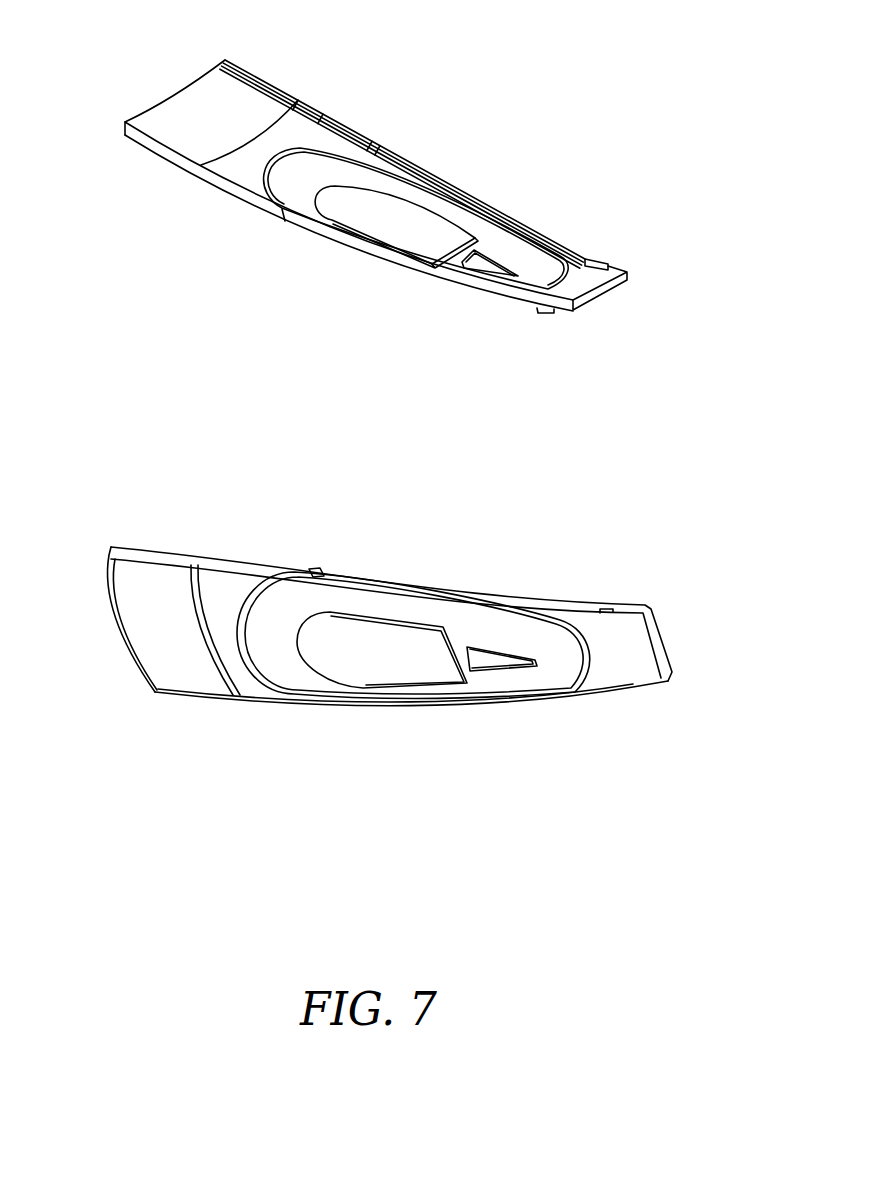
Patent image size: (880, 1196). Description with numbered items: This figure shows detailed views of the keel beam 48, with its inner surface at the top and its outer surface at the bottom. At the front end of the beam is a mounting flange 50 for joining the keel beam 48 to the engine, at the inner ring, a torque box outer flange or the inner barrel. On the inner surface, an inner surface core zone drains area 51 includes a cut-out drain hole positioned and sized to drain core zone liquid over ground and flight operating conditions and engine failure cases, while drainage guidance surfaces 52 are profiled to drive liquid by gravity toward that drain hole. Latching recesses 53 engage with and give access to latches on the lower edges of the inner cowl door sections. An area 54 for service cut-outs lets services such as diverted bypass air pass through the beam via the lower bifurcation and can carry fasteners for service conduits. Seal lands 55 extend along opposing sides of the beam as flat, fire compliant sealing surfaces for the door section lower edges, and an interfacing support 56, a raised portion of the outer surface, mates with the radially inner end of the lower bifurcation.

The keel beam 48 is at (111, 270).
The mounting flange 50 is at (153, 112).
The inner surface core zone drains area 51 is at (504, 243).
The drainage guidance surfaces 52 is at (356, 162).
The latching recesses 53 is at (555, 600).
The area for service cut-outs 54 is at (372, 220).
The seal lands 55 is at (170, 150).
The interfacing support 56 is at (297, 575).